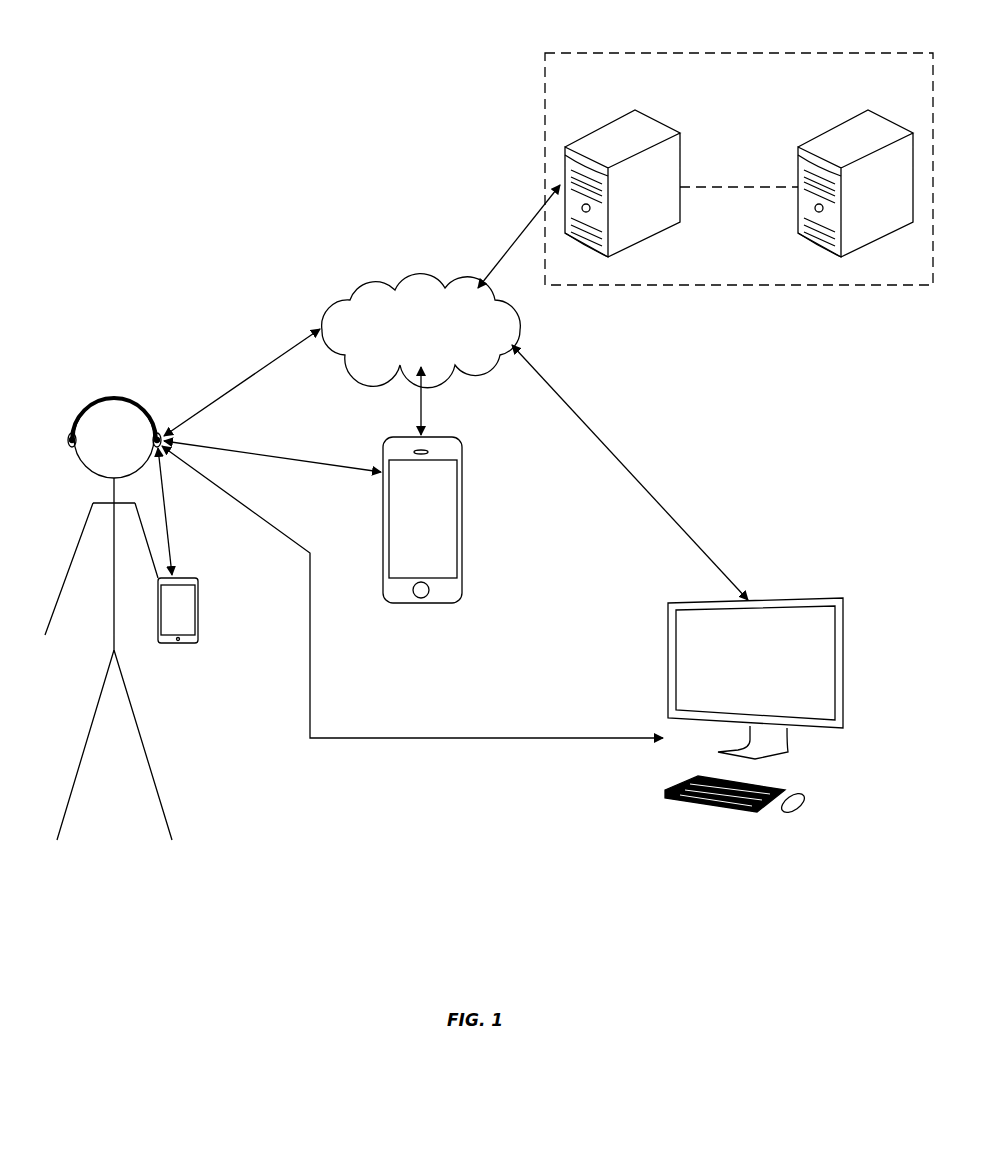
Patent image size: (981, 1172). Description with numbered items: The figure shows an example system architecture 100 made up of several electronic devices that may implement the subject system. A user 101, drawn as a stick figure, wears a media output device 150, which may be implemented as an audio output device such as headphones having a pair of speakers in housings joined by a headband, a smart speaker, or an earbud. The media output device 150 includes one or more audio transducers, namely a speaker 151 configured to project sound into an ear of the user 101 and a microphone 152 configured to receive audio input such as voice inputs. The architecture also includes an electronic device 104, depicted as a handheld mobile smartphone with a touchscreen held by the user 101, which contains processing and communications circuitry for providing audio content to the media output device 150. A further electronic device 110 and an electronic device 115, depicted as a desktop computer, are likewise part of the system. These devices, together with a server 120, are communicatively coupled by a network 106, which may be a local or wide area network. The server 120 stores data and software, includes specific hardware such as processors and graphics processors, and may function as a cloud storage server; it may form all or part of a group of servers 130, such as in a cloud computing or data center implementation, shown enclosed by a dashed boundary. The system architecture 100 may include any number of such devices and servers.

The system architecture 100 is at (120, 19).
The user 101 is at (92, 503).
The electronic device 104 is at (198, 578).
The network 106 is at (420, 287).
The electronic device 110 is at (421, 604).
The electronic device 115 is at (750, 818).
The server 120 is at (568, 150).
The group of servers 130 is at (543, 85).
The media output device 150 is at (78, 420).
The speaker 151 is at (68, 437).
The microphone 152 is at (68, 444).